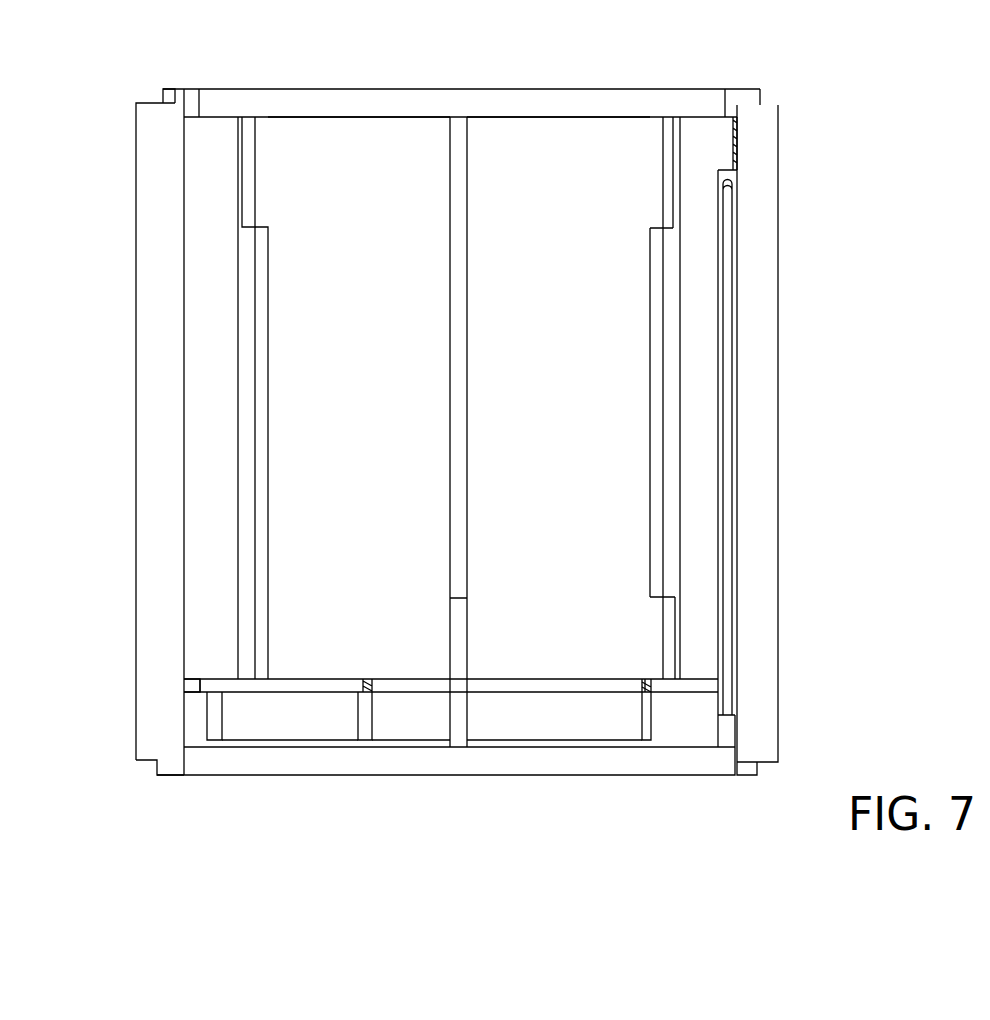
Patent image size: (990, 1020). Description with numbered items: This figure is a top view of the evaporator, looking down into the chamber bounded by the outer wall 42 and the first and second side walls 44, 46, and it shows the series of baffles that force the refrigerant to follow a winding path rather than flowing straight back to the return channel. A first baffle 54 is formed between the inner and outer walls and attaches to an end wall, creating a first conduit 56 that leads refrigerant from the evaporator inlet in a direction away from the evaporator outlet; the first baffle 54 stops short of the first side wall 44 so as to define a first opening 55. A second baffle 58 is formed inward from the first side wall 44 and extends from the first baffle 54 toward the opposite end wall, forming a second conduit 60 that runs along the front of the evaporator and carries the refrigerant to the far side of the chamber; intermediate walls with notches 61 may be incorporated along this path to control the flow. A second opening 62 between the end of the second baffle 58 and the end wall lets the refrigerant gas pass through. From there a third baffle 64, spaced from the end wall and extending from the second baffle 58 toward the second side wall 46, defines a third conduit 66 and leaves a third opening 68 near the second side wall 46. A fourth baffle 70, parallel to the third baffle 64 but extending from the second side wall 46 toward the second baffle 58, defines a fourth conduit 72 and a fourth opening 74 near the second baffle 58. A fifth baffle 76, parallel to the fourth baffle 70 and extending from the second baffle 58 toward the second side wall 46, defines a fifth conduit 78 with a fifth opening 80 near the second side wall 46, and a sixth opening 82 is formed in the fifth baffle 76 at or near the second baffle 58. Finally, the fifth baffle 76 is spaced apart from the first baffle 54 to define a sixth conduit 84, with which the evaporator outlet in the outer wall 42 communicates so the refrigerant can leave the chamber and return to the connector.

The outer wall 42 is at (140, 661).
The first side wall 44 is at (657, 776).
The second side wall 46 is at (230, 103).
The first baffle 54 is at (725, 490).
The first opening 55 is at (728, 727).
The first conduit 56 is at (730, 572).
The second baffle 58 is at (548, 692).
The second conduit 60 is at (405, 722).
The intermediate walls with notches 61 is at (212, 747).
The second opening 62 is at (190, 683).
The third baffle 64 is at (265, 548).
The third conduit 66 is at (197, 504).
The third opening 68 is at (253, 178).
The fourth baffle 70 is at (465, 475).
The fourth conduit 72 is at (385, 155).
The fourth opening 74 is at (450, 632).
The fifth baffle 76 is at (655, 262).
The fifth conduit 78 is at (535, 135).
The fifth opening 80 is at (672, 150).
The sixth opening 82 is at (665, 632).
The sixth conduit 84 is at (700, 253).